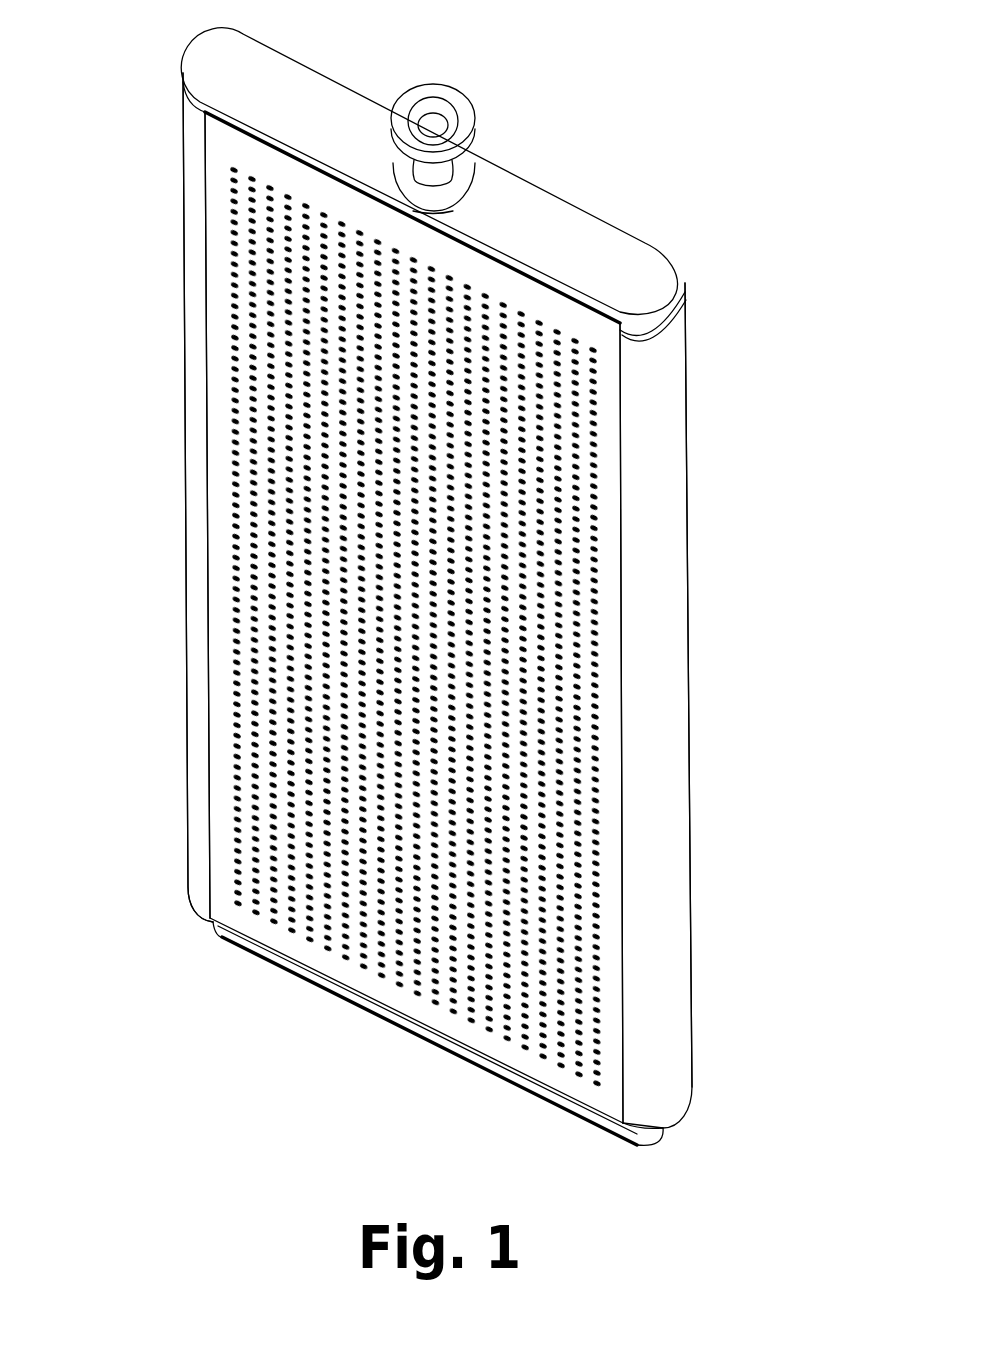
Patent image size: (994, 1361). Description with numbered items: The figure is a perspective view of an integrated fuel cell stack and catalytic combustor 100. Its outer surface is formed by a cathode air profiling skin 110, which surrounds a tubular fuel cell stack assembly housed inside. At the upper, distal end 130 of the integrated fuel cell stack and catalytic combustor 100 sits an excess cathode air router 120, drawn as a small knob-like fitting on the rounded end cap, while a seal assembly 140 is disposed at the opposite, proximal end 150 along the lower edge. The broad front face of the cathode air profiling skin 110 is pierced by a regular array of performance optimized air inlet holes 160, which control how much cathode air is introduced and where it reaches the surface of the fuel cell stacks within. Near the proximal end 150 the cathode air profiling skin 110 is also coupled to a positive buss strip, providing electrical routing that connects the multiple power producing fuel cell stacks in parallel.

The integrated fuel cell stack and catalytic combustor 100 is at (583, 100).
The cathode air profiling skin 110 is at (660, 573).
The excess cathode air router 120 is at (410, 117).
The distal end 130 is at (685, 285).
The seal assembly 140 is at (637, 1147).
The proximal end 150 is at (178, 897).
The performance optimized air inlet holes 160 is at (233, 368).